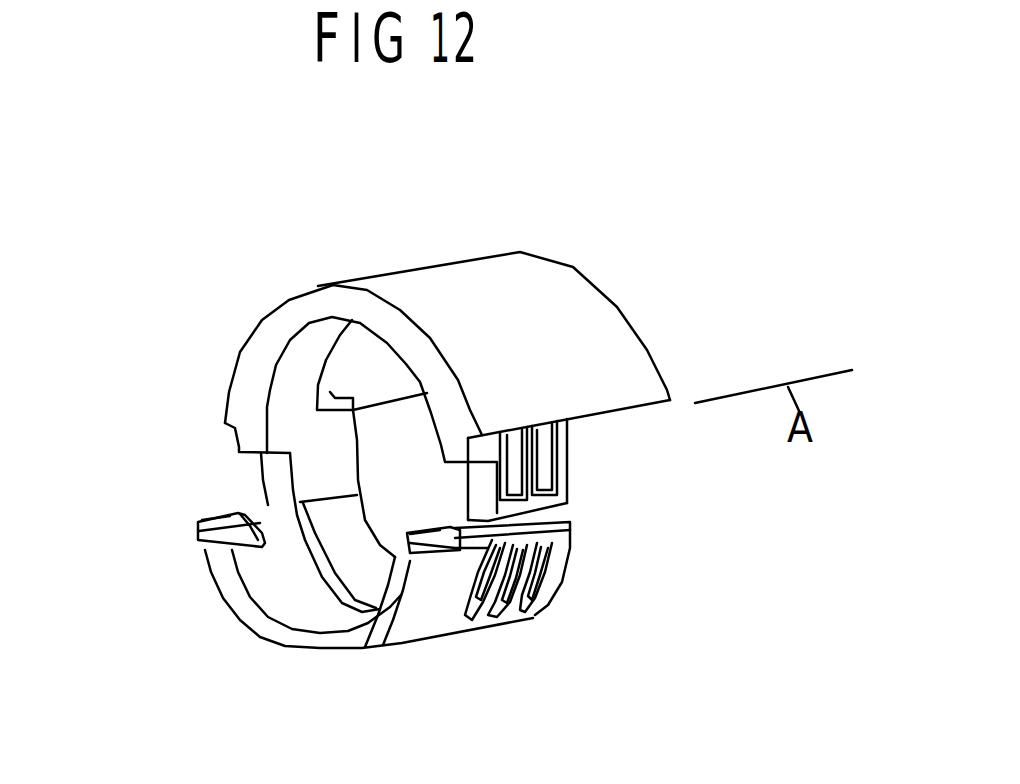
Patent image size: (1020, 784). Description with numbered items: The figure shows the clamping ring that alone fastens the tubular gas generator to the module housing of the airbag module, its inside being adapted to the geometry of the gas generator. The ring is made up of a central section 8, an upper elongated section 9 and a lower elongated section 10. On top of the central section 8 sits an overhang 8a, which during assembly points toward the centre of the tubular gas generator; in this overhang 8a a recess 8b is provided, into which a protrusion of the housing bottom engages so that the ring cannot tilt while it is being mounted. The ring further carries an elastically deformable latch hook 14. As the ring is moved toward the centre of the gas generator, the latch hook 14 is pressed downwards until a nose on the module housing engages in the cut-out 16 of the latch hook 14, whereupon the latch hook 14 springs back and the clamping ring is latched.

The central section 8 is at (560, 463).
The overhang 8a is at (252, 435).
The recess 8b is at (225, 445).
The upper elongated section 9 is at (600, 322).
The lower elongated section 10 is at (362, 635).
The latch hook 14 is at (207, 532).
The cut-out 16 is at (228, 519).